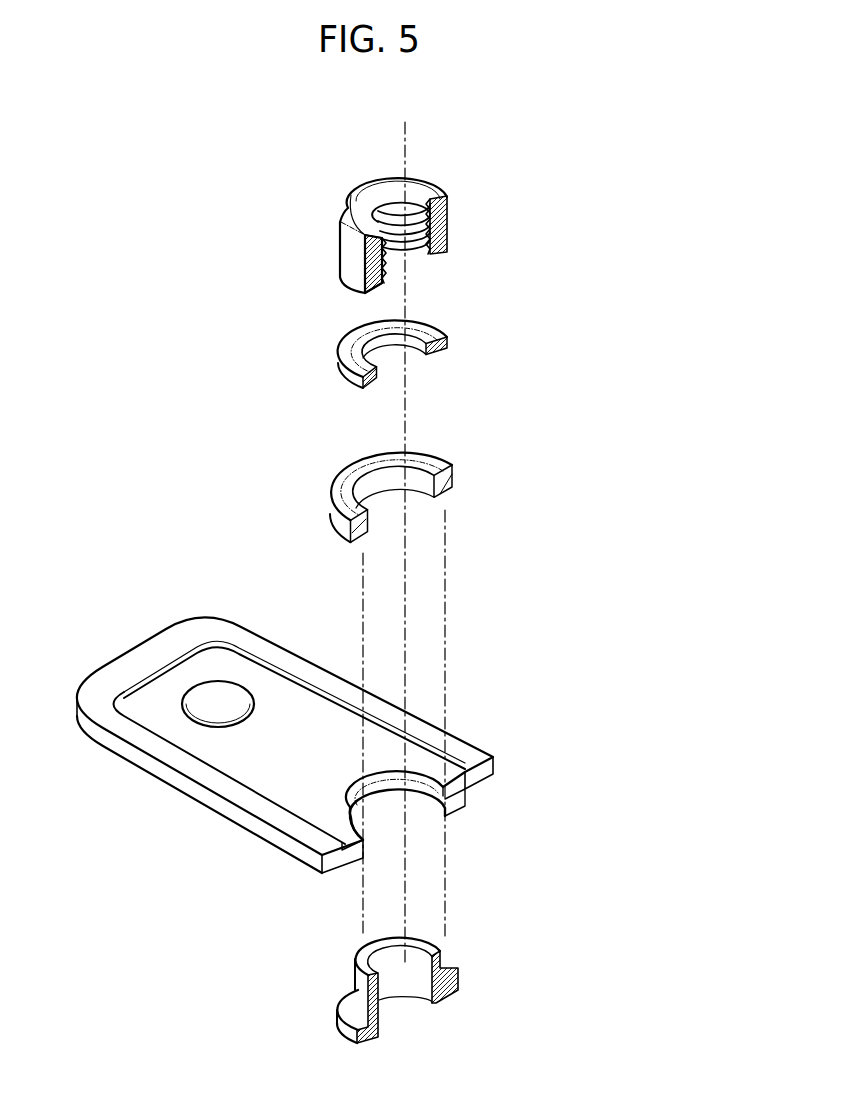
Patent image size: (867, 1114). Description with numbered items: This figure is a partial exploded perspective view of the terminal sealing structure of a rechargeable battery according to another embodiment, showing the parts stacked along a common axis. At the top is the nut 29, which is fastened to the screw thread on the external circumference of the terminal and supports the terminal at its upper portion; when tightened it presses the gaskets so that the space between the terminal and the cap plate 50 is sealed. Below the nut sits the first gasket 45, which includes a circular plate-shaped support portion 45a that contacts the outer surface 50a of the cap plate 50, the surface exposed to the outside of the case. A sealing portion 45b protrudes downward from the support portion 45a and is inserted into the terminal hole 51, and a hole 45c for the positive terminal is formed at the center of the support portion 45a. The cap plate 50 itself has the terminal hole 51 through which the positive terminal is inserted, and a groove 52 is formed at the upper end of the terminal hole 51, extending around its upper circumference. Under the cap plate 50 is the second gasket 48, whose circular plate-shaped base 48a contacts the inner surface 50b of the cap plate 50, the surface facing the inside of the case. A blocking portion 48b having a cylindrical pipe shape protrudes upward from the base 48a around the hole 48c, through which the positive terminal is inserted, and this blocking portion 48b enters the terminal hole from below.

The nut 29 is at (352, 257).
The first gasket 45 is at (393, 470).
The support portion 45a is at (420, 457).
The sealing portion 45b is at (451, 491).
The hole 45c is at (364, 463).
The cap plate 50 is at (314, 757).
The outer surface 50a is at (277, 690).
The inner surface 50b is at (356, 862).
The terminal hole 51 is at (424, 802).
The groove 52 is at (421, 790).
The second gasket 48 is at (392, 1008).
The base 48a is at (351, 1013).
The blocking portion 48b is at (363, 957).
The hole 48c is at (408, 1005).